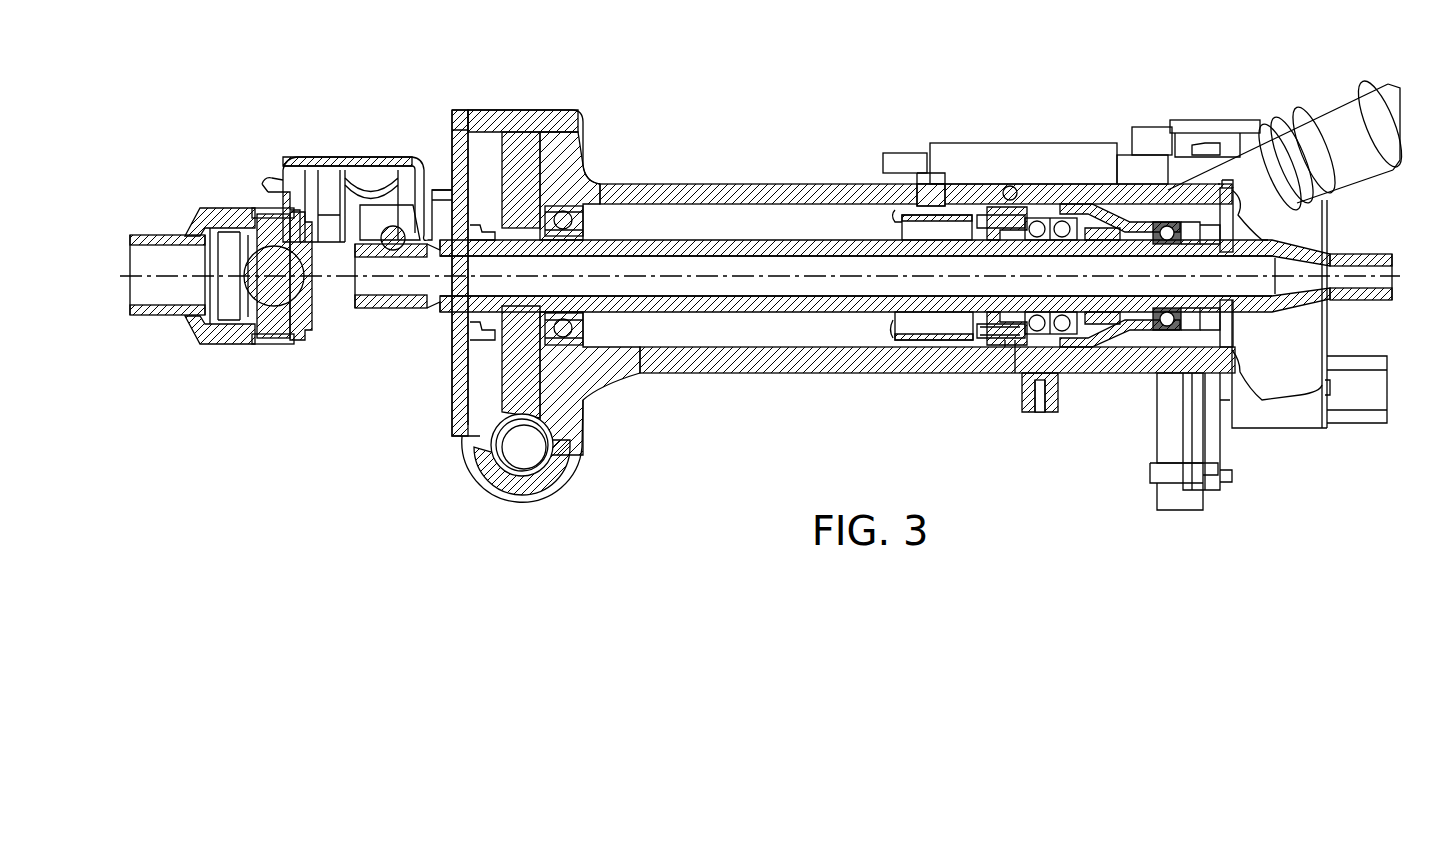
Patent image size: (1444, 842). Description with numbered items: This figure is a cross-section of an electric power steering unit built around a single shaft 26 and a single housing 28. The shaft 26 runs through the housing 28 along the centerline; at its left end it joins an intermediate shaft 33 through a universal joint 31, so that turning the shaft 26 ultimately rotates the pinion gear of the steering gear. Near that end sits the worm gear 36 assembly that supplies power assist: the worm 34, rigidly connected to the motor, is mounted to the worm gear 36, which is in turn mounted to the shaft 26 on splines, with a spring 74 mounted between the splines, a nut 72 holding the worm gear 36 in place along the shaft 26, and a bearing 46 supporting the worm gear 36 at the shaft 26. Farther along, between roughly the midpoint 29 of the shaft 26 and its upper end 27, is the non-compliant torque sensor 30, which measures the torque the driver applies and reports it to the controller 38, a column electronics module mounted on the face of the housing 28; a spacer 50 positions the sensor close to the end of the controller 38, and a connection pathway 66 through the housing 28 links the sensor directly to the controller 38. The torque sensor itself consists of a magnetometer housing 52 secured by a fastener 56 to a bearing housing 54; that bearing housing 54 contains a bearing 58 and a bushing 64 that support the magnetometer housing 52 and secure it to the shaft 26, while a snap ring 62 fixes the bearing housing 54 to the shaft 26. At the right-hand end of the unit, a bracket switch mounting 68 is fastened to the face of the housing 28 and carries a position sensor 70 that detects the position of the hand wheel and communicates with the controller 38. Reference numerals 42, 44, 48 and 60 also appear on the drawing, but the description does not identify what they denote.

The shaft 26 is at (690, 312).
The upper end 27 is at (1262, 316).
The housing 28 is at (782, 374).
The midpoint 29 is at (750, 258).
The non-compliant torque sensor 30 is at (918, 326).
The universal joint 31 is at (265, 345).
The intermediate shaft 33 is at (142, 233).
The worm 34 is at (522, 455).
The worm gear 36 is at (517, 132).
The controller 38 is at (982, 160).
The output shaft 42 is at (1262, 228).
The bearing 44 is at (1166, 225).
The bearing 46 is at (590, 184).
The seal 48 is at (1197, 235).
The spacer 50 is at (1090, 240).
The magnetometer housing 52 is at (978, 340).
The bearing housing 54 is at (1015, 340).
The fastener 56 is at (990, 350).
The bearing 58 is at (1052, 340).
The steering column assembly 60 is at (718, 92).
The snap ring 62 is at (1065, 340).
The bushing 64 is at (1088, 326).
The connection pathway 66 is at (925, 188).
The bracket switch mounting 68 is at (1125, 373).
The position sensor 70 is at (1265, 405).
The nut 72 is at (462, 338).
The spring 74 is at (505, 355).